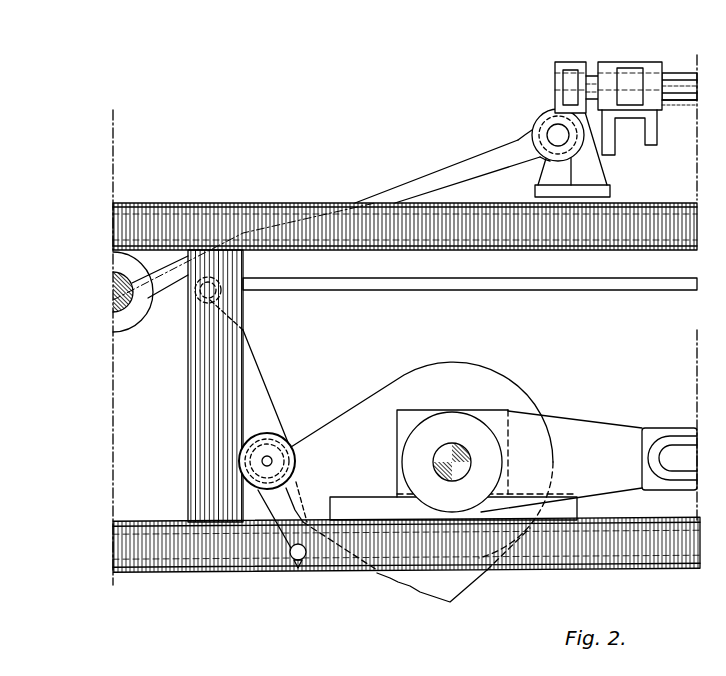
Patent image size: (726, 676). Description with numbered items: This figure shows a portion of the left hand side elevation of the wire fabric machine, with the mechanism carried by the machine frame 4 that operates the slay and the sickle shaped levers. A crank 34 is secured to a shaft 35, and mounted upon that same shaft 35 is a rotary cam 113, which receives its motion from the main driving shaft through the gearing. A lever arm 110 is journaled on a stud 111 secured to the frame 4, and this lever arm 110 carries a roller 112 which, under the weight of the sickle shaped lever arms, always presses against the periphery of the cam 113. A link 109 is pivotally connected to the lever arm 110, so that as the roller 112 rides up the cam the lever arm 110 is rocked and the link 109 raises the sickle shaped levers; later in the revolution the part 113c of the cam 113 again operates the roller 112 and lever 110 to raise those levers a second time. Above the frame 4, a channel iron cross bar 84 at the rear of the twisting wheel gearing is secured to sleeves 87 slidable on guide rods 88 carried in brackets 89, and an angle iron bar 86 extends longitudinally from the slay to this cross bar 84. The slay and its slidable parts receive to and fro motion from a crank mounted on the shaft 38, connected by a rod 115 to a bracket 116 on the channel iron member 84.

The machine frame 4 is at (236, 208).
The link 109 is at (620, 290).
The shaft 38 is at (110, 299).
The rod 115 is at (440, 167).
The bracket 116 is at (531, 122).
The bracket 89 is at (584, 40).
The sleeve 87 is at (650, 40).
The guide rod 88 is at (552, 89).
The angle iron bar 86 is at (683, 110).
The channel iron cross bar 84 is at (645, 128).
The lever arm 110 is at (265, 390).
The roller 112 is at (290, 428).
The rotary cam 113 is at (490, 370).
The cam part 113c is at (300, 495).
The stud 111 is at (297, 565).
The shaft 35 is at (453, 465).
The crank 34 is at (675, 408).